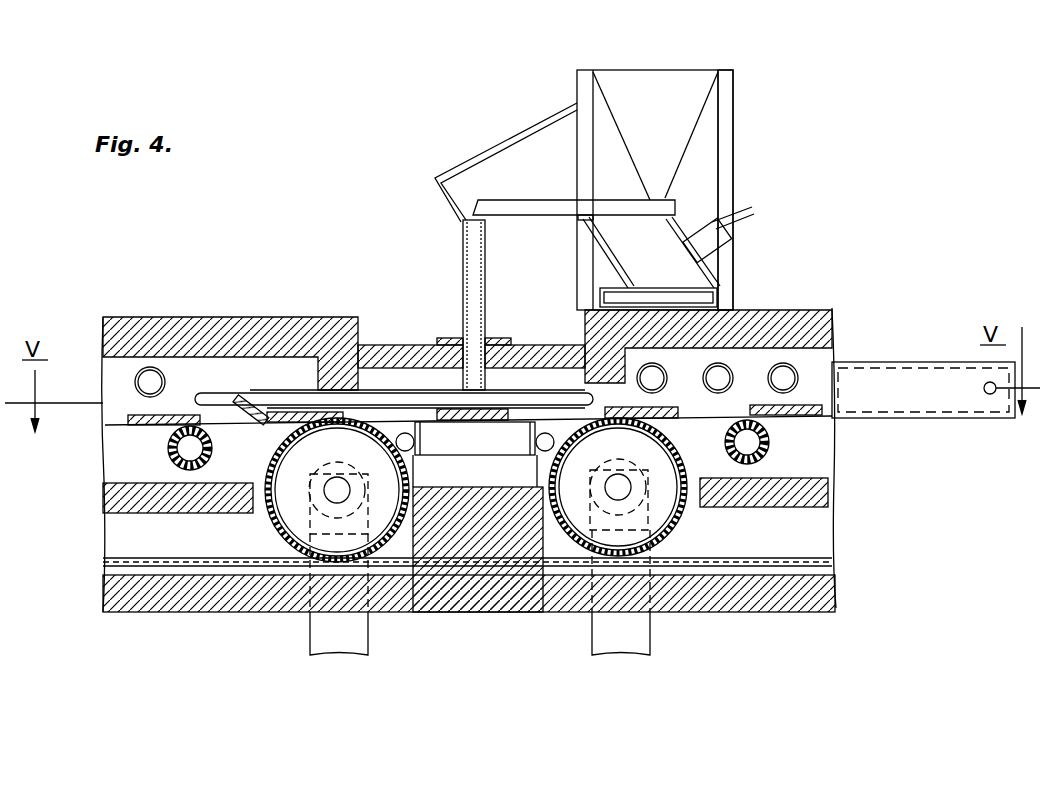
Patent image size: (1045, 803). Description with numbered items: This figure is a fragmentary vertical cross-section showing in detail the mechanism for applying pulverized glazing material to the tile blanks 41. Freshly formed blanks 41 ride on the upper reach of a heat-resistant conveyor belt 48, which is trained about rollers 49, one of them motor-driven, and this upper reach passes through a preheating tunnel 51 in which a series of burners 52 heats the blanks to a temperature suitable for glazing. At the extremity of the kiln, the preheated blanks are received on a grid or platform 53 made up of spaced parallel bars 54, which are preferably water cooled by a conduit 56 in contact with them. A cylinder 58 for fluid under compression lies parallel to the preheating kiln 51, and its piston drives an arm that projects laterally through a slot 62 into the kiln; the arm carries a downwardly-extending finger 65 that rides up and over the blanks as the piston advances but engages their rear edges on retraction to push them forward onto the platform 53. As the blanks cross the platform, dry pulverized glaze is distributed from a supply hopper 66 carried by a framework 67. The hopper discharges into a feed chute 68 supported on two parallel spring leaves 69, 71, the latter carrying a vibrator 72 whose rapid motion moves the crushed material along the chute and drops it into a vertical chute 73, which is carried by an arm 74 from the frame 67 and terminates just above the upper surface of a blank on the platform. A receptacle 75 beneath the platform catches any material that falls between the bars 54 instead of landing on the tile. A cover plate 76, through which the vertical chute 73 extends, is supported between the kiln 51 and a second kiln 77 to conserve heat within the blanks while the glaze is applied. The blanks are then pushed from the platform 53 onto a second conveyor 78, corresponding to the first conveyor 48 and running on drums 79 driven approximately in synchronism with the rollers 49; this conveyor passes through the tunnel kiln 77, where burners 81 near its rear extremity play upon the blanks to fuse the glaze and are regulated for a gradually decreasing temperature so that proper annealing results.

The blanks 41 is at (210, 427).
The conveyor belt 48 is at (135, 425).
The rollers 49 is at (283, 508).
The preheating tunnel 51 is at (137, 325).
The burners 52 is at (165, 388).
The grid or platform 53 is at (459, 423).
The spaced parallel bars 54 is at (392, 420).
The conduit 56 is at (590, 440).
The cylinder 58 is at (880, 363).
The slot 62 is at (290, 397).
The downwardly-extending finger 65 is at (245, 393).
The supply hopper 66 is at (655, 78).
The framework 67 is at (735, 130).
The feed chute 68 is at (505, 200).
The spring leaf 69 is at (608, 252).
The spring leaf 71 is at (707, 245).
The vibrator 72 is at (728, 246).
The vertical chute 73 is at (462, 262).
The arm 74 is at (532, 125).
The receptacle 75 is at (477, 477).
The cover plate 76 is at (520, 345).
The second kiln 77 is at (835, 302).
The second conveyor 78 is at (788, 420).
The drums 79 is at (668, 515).
The burners 81 is at (768, 380).